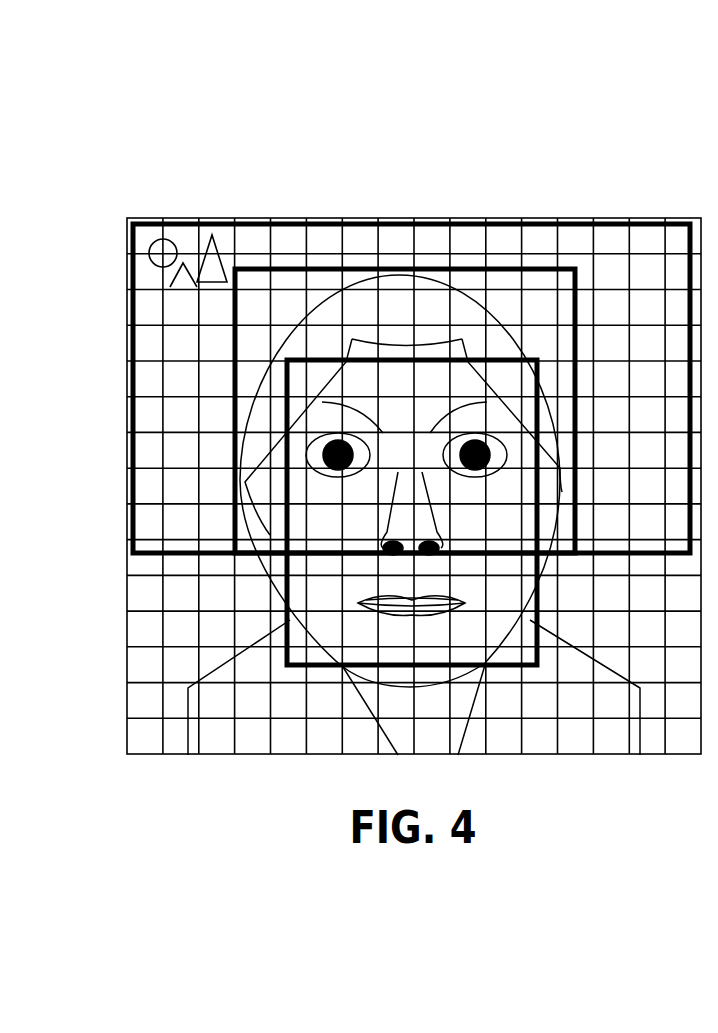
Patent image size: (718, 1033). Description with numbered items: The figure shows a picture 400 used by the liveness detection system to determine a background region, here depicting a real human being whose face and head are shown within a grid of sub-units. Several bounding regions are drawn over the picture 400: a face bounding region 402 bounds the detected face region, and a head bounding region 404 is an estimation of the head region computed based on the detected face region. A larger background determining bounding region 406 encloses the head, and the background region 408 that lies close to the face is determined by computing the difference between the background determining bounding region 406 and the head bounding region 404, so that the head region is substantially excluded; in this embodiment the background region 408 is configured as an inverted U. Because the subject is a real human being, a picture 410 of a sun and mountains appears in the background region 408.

The picture 400 is at (227, 122).
The face bounding region 402 is at (332, 362).
The head bounding region 404 is at (428, 269).
The background determining bounding region 406 is at (188, 223).
The background region 408 is at (608, 340).
The picture of a sun and mountains 410 is at (223, 236).